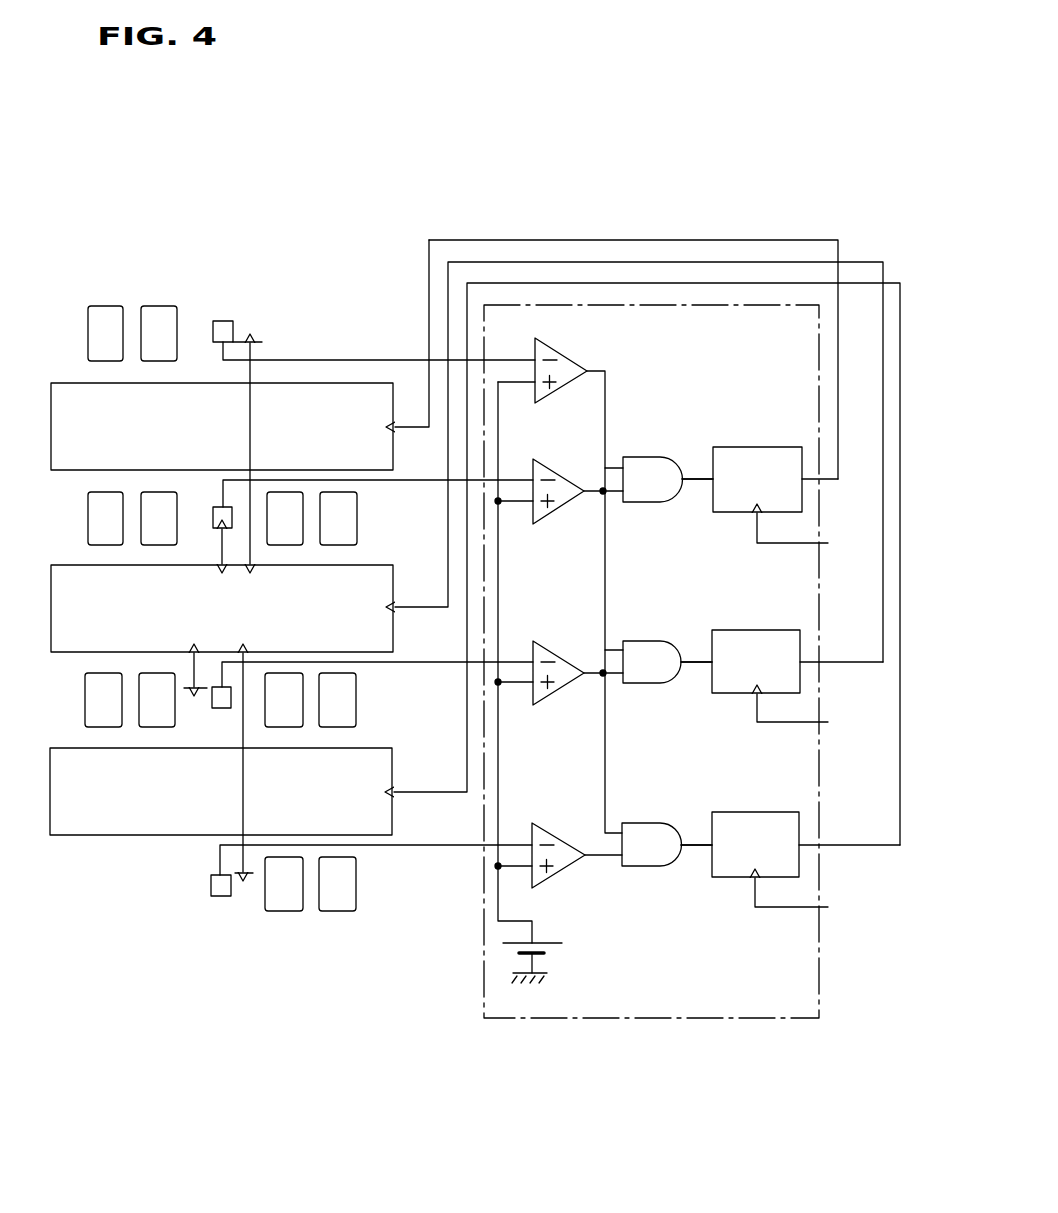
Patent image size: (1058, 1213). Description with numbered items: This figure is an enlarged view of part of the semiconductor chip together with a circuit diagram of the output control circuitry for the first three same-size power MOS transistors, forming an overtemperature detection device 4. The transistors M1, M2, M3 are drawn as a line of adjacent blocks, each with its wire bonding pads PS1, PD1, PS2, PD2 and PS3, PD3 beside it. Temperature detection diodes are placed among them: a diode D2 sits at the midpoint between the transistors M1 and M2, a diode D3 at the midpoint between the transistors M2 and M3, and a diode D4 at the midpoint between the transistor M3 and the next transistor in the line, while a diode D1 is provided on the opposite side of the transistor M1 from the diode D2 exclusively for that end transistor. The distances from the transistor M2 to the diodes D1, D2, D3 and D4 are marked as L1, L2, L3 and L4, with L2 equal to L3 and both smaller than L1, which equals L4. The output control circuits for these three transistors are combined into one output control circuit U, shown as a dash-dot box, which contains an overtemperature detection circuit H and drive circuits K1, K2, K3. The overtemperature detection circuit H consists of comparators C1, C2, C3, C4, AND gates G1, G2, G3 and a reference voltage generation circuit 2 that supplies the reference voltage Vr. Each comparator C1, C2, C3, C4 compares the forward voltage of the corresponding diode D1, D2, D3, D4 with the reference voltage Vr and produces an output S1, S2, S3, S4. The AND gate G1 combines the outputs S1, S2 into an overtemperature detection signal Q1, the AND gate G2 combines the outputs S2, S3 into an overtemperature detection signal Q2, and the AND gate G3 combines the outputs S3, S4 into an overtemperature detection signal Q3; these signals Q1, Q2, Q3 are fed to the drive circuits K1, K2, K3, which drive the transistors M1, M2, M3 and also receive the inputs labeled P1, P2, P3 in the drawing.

The overtemperature detection device 4 is at (460, 222).
The reference voltage generation circuit 2 is at (560, 952).
The overtemperature detection circuit H is at (666, 392).
The output control circuit U is at (657, 1019).
The power MOS transistor M1 is at (66, 747).
The power MOS transistor M2 is at (71, 564).
The power MOS transistor M3 is at (71, 382).
The distance L1 is at (256, 762).
The distance L2 is at (200, 668).
The distance L3 is at (205, 546).
The distance L4 is at (262, 453).
The temperature detection diode D1 is at (221, 897).
The temperature detection diode D2 is at (222, 709).
The temperature detection diode D3 is at (212, 517).
The temperature detection diode D4 is at (222, 320).
The comparator C1 is at (566, 824).
The comparator C2 is at (560, 640).
The comparator C3 is at (571, 459).
The comparator C4 is at (574, 357).
The comparator output S1 is at (596, 860).
The comparator output S2 is at (588, 680).
The comparator output S3 is at (588, 495).
The comparator output S4 is at (593, 370).
The AND gate G1 is at (667, 844).
The AND gate G2 is at (667, 662).
The AND gate G3 is at (668, 479).
The overtemperature detection signal Q1 is at (692, 844).
The overtemperature detection signal Q2 is at (692, 661).
The overtemperature detection signal Q3 is at (694, 478).
The drive circuit K1 is at (751, 812).
The drive circuit K2 is at (735, 630).
The drive circuit K3 is at (757, 446).
The drive pulse signal P1 is at (804, 899).
The drive pulse signal P2 is at (805, 715).
The drive pulse signal P3 is at (805, 535).
The reference voltage Vr is at (527, 663).
The wire bonding pad PS1 is at (130, 700).
The wire bonding pad PS2 is at (132, 518).
The wire bonding pad PS3 is at (132, 333).
The wire bonding pad PD1 is at (310, 884).
The wire bonding pad PD2 is at (310, 700).
The wire bonding pad PD3 is at (312, 518).